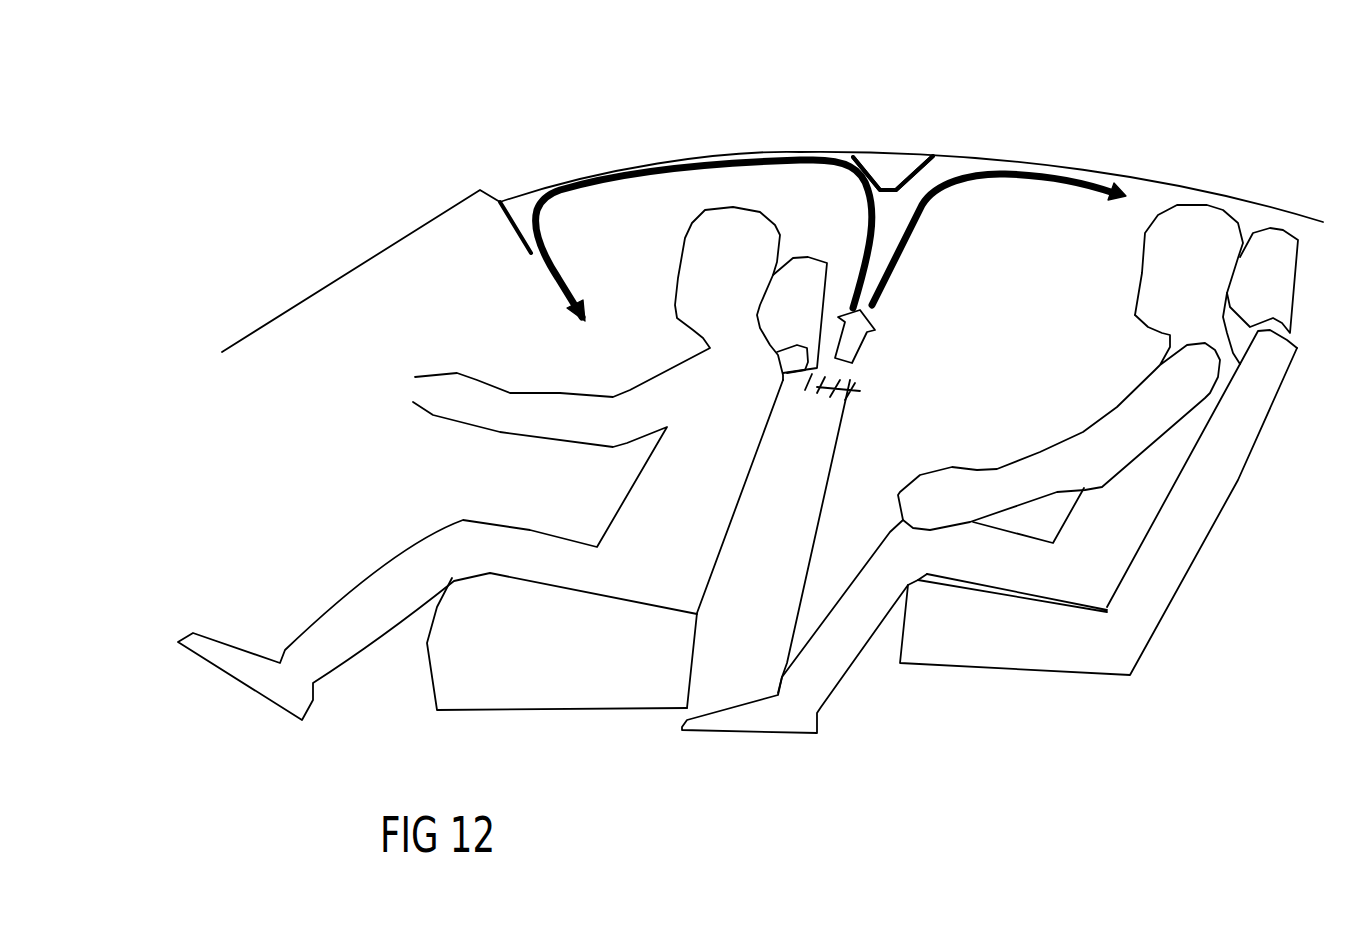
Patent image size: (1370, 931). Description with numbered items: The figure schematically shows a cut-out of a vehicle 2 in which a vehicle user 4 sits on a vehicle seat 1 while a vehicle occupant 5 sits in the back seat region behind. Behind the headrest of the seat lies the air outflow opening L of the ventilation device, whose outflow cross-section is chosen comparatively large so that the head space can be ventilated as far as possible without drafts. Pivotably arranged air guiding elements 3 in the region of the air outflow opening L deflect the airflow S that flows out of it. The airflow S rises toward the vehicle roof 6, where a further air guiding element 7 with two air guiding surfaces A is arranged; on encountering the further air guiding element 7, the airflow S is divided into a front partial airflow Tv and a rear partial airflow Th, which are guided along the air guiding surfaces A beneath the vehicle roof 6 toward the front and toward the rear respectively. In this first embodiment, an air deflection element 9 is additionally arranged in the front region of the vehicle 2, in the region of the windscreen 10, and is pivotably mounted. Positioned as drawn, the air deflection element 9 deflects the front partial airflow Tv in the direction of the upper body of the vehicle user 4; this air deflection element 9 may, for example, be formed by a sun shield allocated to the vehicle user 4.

The vehicle seat 1 is at (585, 687).
The vehicle 2 is at (972, 117).
The air guiding elements 3 is at (853, 397).
The vehicle user 4 is at (647, 517).
The vehicle occupant 5 is at (1162, 483).
The vehicle roof 6 is at (738, 153).
The further air guiding element 7 is at (887, 163).
The air deflection element 9 is at (510, 225).
The windscreen 10 is at (340, 278).
The front partial airflow Tv is at (580, 177).
The rear partial airflow Th is at (1080, 183).
The air guiding surfaces A is at (853, 175).
The airflow S is at (870, 320).
The air outflow opening L is at (848, 373).